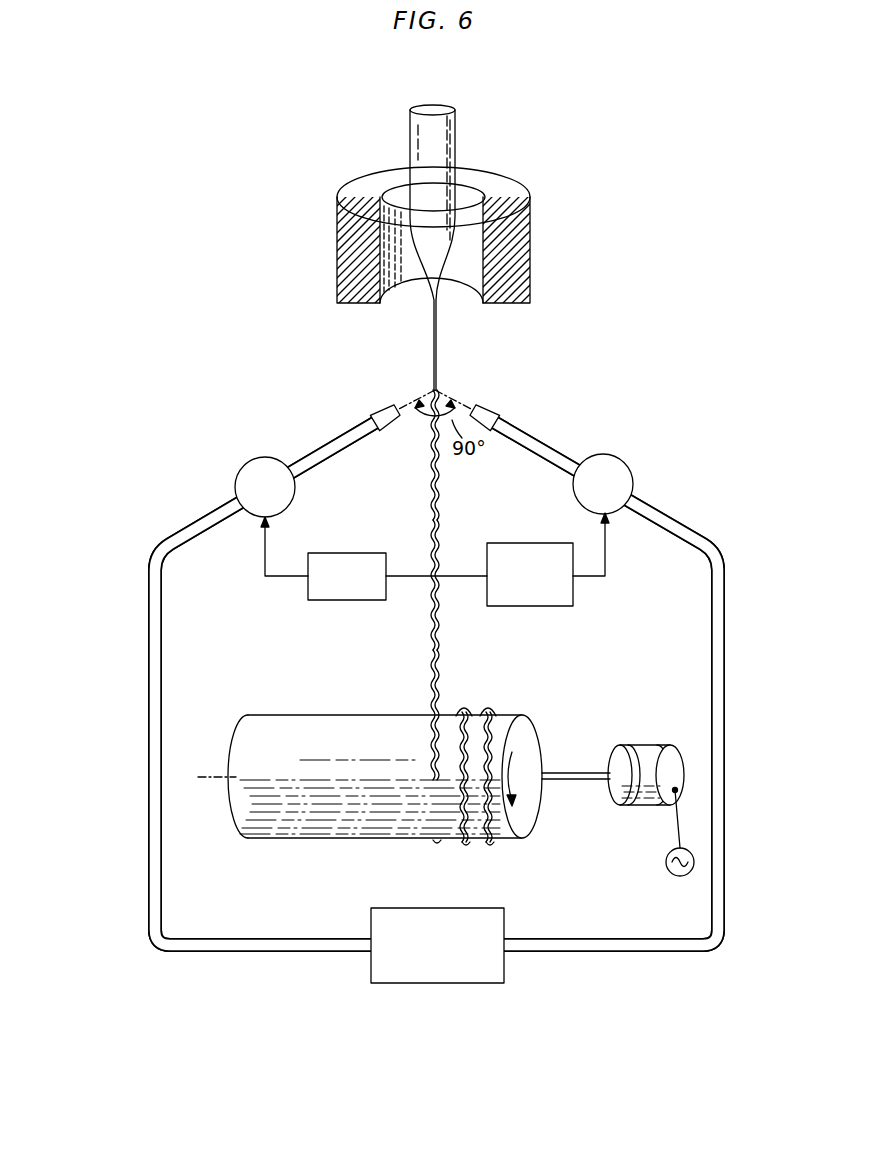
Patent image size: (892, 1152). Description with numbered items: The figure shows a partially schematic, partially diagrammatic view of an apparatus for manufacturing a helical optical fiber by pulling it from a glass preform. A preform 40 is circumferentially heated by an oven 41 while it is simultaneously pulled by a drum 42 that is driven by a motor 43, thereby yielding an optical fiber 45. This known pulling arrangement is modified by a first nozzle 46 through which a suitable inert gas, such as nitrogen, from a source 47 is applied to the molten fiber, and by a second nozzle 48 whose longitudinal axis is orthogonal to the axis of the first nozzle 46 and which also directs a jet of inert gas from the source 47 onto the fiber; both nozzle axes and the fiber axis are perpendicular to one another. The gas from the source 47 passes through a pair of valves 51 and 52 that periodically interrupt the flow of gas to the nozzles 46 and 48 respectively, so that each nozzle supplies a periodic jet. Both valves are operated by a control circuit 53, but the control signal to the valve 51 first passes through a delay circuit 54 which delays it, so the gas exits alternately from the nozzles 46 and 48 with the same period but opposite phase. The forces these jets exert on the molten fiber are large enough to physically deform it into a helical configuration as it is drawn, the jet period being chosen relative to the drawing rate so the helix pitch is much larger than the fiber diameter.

The preform 40 is at (456, 133).
The oven 41 is at (531, 255).
The drum 42 is at (541, 733).
The motor 43 is at (645, 745).
The optical fiber 45 is at (439, 490).
The first nozzle 46 is at (380, 406).
The source 47 is at (440, 984).
The second nozzle 48 is at (490, 406).
The valve 51 is at (244, 462).
The valve 52 is at (622, 458).
The control circuit 53 is at (534, 607).
The delay circuit 54 is at (356, 601).